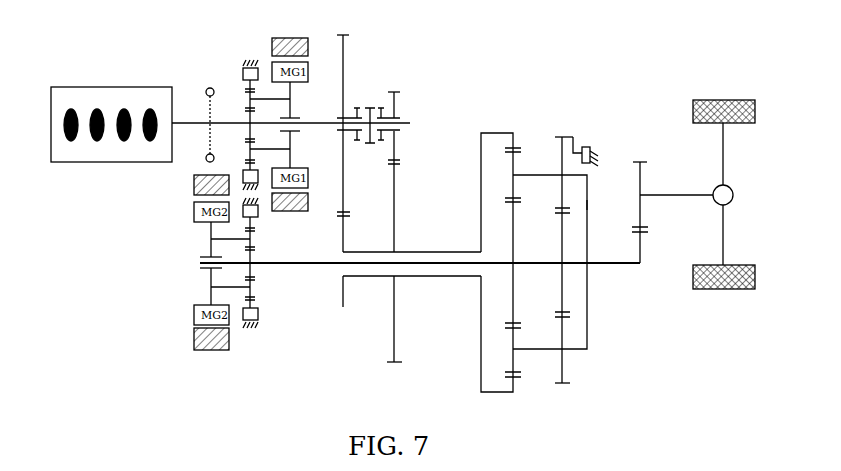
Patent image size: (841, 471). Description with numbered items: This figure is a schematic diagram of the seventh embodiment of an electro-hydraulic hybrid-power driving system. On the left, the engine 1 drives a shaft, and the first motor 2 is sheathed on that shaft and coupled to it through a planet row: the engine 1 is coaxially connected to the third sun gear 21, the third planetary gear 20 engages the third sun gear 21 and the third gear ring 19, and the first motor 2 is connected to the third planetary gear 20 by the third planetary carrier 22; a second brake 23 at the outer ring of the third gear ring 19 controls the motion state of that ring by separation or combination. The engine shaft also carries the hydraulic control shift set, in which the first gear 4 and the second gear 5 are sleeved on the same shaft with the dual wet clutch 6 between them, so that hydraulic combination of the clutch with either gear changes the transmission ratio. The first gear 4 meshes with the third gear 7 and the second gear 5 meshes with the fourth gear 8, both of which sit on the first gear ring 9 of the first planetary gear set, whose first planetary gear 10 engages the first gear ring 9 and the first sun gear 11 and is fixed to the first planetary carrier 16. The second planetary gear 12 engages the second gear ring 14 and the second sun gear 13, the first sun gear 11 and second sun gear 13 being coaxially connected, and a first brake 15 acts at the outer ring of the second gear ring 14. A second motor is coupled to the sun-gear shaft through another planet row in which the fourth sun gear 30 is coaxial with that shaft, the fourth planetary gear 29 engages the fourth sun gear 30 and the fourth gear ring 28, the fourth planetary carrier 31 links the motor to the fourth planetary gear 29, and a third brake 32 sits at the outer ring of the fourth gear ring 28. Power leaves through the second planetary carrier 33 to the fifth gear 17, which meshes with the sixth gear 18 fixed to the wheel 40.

The engine 1 is at (51, 161).
The first motor 2 is at (272, 38).
The first gear 4 is at (344, 63).
The second gear 5 is at (397, 108).
The dual wet clutch 6 is at (366, 103).
The third gear 7 is at (344, 241).
The fourth gear 8 is at (396, 224).
The first gear ring 9 is at (494, 132).
The first planetary gear 10 is at (514, 166).
The first sun gear 11 is at (515, 252).
The second planetary gear 12 is at (560, 190).
The second sun gear 13 is at (561, 280).
The second gear ring 14 is at (564, 135).
The first brake 15 is at (598, 157).
The first planetary carrier 16 is at (534, 173).
The fifth gear 17 is at (642, 258).
The sixth gear 18 is at (642, 187).
The third gear ring 19 is at (250, 87).
The third planetary gear 20 is at (250, 101).
The third sun gear 21 is at (250, 121).
The third planetary carrier 22 is at (258, 103).
The second brake 23 is at (243, 66).
The fourth gear ring 28 is at (254, 246).
The fourth planetary gear 29 is at (254, 262).
The fourth sun gear 30 is at (256, 301).
The fourth planetary carrier 31 is at (248, 238).
The third brake 32 is at (257, 325).
The second planetary carrier 33 is at (590, 204).
The wheel 40 is at (754, 97).